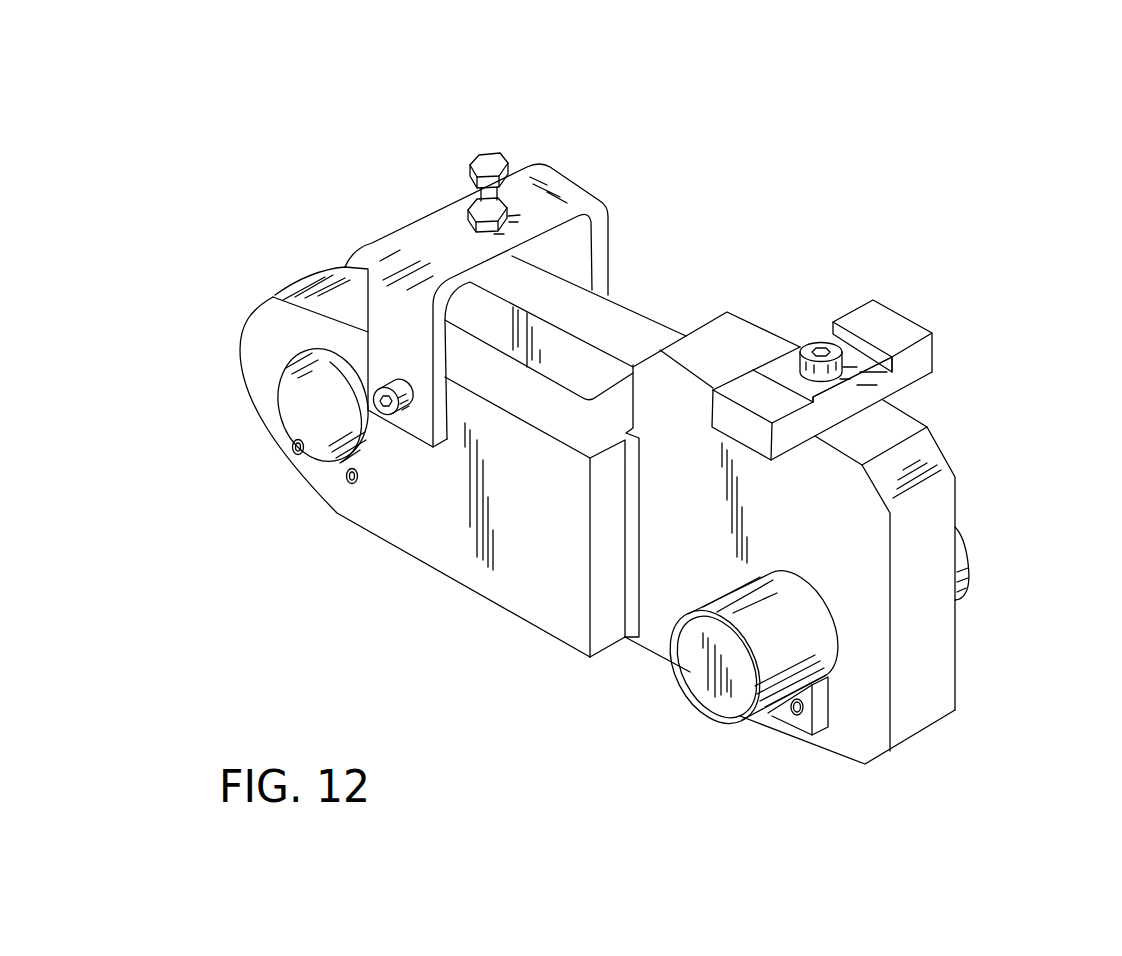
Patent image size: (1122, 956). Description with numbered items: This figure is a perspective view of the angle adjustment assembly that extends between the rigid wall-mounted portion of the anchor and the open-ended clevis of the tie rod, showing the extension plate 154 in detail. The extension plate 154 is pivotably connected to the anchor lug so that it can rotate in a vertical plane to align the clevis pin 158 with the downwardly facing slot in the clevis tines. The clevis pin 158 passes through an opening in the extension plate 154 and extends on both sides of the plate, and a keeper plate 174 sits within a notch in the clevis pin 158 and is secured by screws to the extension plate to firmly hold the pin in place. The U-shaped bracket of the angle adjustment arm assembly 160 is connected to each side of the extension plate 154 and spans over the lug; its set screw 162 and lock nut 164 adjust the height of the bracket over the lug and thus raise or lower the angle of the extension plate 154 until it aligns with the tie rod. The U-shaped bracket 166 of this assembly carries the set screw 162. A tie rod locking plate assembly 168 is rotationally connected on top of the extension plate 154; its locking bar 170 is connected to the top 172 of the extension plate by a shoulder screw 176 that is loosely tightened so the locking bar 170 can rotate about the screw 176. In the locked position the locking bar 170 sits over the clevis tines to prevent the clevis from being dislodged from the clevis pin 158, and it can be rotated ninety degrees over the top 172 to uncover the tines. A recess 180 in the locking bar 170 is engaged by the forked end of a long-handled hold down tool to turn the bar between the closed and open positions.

The extension plate 154 is at (637, 294).
The clevis pin 158 is at (967, 558).
The angle adjustment arm assembly 160 is at (526, 251).
The set screw 162 is at (495, 165).
The lock nut 164 is at (470, 205).
The strap 166 is at (608, 254).
The tie rod locking plate assembly 168 is at (887, 338).
The locking bar 170 is at (925, 358).
The top of the extension plate 172 is at (742, 343).
The keeper plate 174 is at (780, 716).
The shoulder screw 176 is at (818, 348).
The recess 180 is at (880, 372).